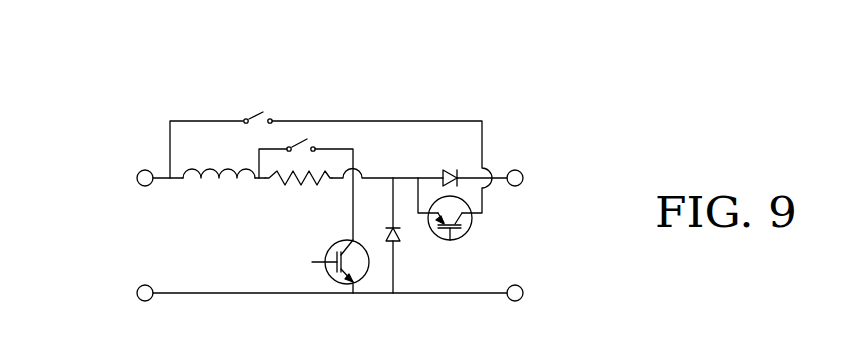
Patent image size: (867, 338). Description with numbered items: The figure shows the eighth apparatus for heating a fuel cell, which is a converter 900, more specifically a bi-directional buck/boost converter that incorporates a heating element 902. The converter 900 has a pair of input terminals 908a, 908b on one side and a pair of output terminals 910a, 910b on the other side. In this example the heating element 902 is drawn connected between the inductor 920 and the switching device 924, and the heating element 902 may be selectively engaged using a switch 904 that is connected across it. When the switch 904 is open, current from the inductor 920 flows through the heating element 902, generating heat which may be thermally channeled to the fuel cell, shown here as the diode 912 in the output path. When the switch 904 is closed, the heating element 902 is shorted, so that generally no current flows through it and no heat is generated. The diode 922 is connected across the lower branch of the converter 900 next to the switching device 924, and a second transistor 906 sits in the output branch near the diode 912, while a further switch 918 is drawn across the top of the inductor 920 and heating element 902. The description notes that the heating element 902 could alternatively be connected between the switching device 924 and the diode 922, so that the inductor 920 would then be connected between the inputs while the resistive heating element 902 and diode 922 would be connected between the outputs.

The converter 900 is at (452, 82).
The heating element 902 is at (290, 180).
The switch 904 is at (298, 137).
The transistor 906 is at (470, 232).
The input terminal 908a is at (137, 178).
The input terminal 908b is at (137, 293).
The output terminal 910a is at (523, 178).
The output terminal 910b is at (523, 293).
The fuel cell 912 is at (441, 176).
The switch 918 is at (257, 107).
The inductor 920 is at (235, 166).
The diode 922 is at (396, 246).
The switching device 924 is at (334, 243).